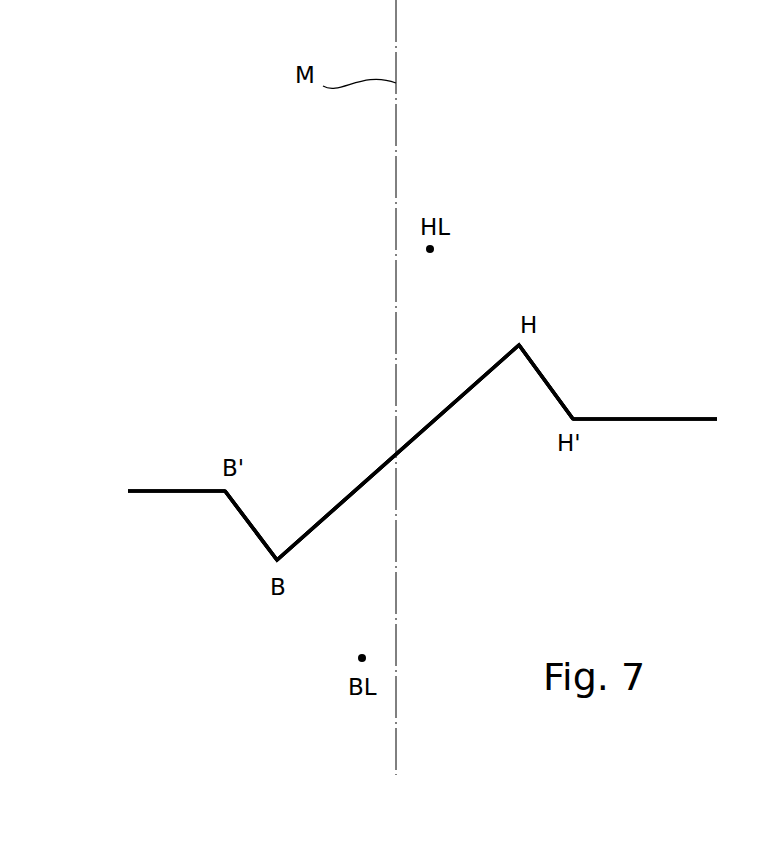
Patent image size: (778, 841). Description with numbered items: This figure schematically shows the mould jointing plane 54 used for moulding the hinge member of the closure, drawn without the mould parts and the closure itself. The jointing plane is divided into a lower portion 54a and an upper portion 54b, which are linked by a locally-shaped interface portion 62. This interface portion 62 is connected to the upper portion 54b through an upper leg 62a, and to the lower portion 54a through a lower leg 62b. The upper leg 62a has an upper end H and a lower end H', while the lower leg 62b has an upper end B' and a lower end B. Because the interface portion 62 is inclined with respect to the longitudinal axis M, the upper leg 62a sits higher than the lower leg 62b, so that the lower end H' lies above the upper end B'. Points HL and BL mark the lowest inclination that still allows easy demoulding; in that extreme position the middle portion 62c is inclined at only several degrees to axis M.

The mould jointing plane 54 is at (124, 471).
The lower portion of mould jointing plane 54a is at (168, 490).
The upper portion of mould jointing plane 54b is at (662, 422).
The locally-shaped interface portion 62 is at (360, 442).
The upper leg 62a is at (248, 527).
The lower leg 62b is at (547, 382).
The middle portion 62c is at (413, 443).